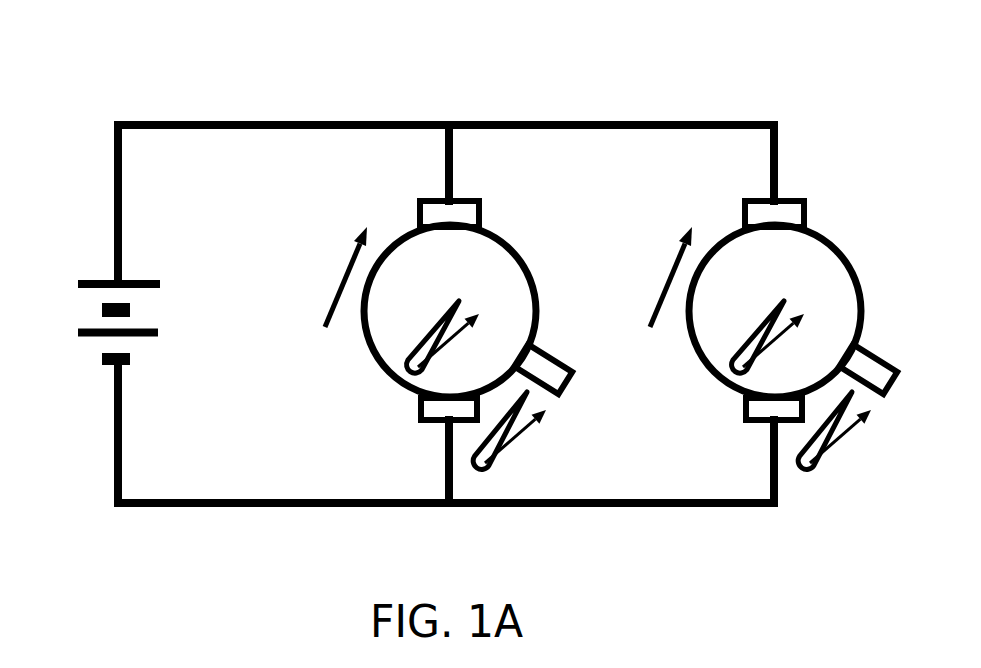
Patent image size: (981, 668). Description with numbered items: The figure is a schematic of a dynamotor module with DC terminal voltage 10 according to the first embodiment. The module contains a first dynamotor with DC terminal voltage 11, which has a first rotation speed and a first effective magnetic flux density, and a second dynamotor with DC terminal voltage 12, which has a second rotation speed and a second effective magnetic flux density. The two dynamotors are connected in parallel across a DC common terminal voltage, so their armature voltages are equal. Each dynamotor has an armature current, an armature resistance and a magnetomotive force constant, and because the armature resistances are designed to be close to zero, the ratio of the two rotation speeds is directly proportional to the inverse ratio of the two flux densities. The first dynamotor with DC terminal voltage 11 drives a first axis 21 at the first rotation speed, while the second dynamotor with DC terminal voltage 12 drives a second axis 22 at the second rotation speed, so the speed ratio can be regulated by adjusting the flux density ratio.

The dynamotor module with DC terminal voltage 10 is at (43, 42).
The first dynamotor with DC terminal voltage 11 is at (458, 277).
The second dynamotor with DC terminal voltage 12 is at (791, 336).
The first axis 21 is at (558, 392).
The second axis 22 is at (887, 404).